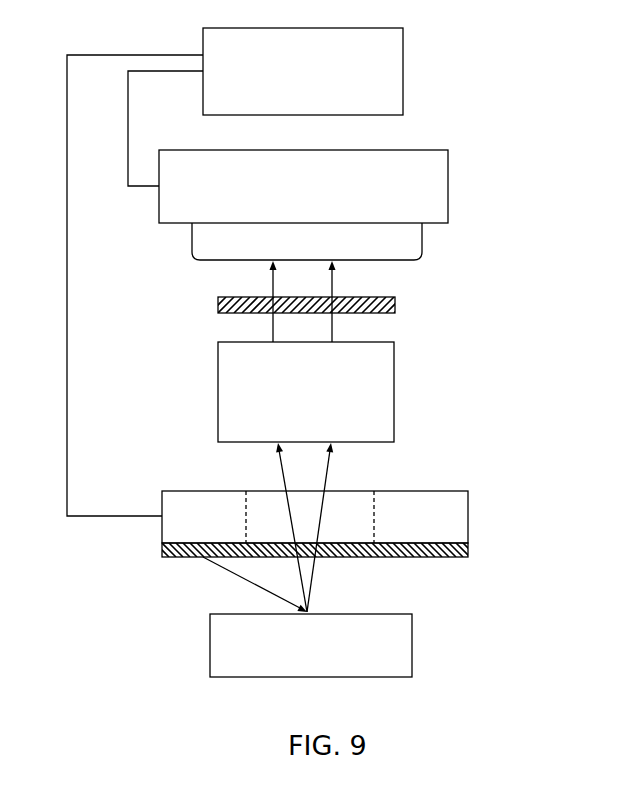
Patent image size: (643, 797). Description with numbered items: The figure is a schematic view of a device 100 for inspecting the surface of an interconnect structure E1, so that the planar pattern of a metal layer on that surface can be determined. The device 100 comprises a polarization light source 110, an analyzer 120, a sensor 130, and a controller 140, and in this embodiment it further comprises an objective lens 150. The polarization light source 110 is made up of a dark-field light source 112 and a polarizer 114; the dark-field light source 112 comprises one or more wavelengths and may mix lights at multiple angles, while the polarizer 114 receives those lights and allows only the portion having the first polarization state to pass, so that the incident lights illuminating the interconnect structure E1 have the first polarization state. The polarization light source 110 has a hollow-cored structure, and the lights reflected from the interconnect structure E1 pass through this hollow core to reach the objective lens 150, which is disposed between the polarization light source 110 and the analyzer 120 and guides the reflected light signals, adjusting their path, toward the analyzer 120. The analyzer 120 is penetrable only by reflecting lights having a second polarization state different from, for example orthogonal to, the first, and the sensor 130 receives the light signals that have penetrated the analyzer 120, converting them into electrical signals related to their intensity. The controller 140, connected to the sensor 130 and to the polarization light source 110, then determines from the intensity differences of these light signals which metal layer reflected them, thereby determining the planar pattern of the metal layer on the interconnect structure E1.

The device 100 is at (536, 126).
The polarization light source 110 is at (391, 524).
The dark-field light source 112 is at (468, 516).
The polarizer 114 is at (463, 548).
The analyzer 120 is at (395, 305).
The sensor 130 is at (303, 205).
The controller 140 is at (303, 71).
The objective lens 150 is at (392, 383).
The interconnect structure E1 is at (311, 645).